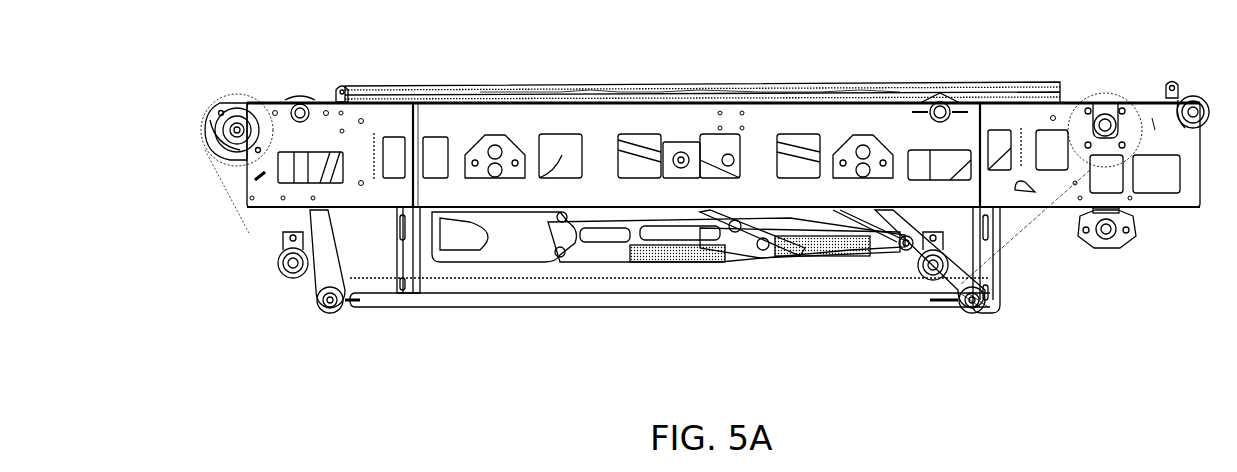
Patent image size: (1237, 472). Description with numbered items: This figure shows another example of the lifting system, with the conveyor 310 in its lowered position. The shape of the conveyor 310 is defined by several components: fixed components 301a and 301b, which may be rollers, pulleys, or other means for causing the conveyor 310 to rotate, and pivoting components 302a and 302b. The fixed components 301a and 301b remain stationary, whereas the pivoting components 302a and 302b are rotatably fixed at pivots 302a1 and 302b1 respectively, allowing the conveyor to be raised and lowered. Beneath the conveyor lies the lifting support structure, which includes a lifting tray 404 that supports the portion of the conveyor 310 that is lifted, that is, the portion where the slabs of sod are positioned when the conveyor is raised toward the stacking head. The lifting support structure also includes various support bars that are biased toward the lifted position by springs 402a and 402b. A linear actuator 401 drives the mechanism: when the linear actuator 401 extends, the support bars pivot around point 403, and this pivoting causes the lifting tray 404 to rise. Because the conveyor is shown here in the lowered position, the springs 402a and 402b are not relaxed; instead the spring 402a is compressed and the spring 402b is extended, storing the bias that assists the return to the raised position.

The fixed component 301a is at (232, 100).
The fixed component 301b is at (1112, 97).
The pivoting component 302a is at (293, 217).
The pivoting component 302b is at (1003, 237).
The pivot 302a1 is at (300, 96).
The pivot 302b1 is at (932, 97).
The conveyor 310 is at (1007, 235).
The linear actuator 401 is at (510, 230).
The spring 402a is at (795, 255).
The spring 402b is at (703, 255).
The pivot point 403 is at (740, 225).
The lifting tray 404 is at (630, 98).